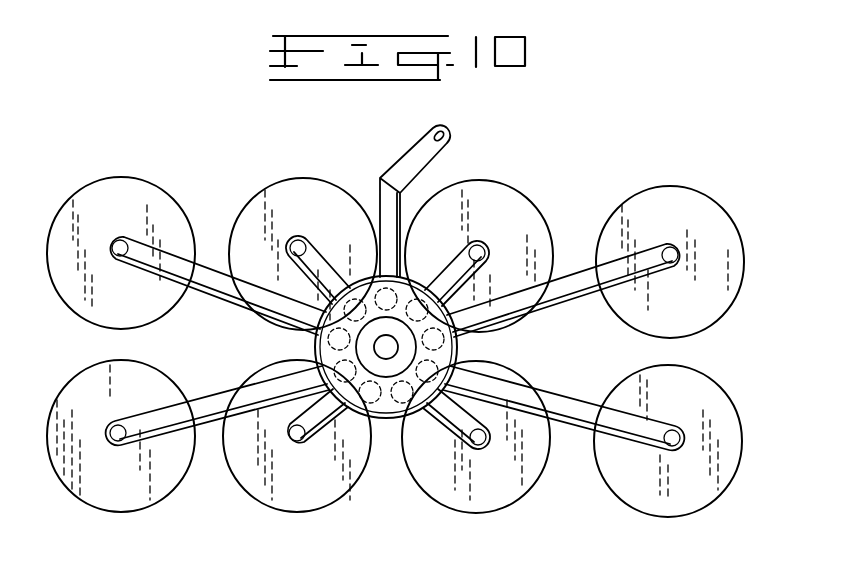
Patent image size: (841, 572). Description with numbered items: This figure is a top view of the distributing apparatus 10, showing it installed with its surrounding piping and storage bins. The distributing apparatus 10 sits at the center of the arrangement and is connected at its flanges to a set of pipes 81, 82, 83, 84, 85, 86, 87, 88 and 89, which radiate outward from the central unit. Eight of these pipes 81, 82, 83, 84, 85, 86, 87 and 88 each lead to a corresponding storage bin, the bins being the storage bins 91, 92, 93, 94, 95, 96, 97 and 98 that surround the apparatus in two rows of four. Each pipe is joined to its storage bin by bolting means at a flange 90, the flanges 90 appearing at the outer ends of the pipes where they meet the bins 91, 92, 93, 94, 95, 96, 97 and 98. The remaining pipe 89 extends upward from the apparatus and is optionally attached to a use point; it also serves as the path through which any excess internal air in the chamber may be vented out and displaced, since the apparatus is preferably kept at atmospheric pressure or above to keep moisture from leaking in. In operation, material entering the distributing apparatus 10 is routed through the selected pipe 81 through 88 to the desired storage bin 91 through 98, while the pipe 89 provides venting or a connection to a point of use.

The distributing apparatus 10 is at (512, 350).
The pipe 81 is at (144, 470).
The pipe 82 is at (330, 420).
The pipe 83 is at (402, 425).
The pipe 84 is at (582, 430).
The pipe 85 is at (203, 277).
The pipe 86 is at (313, 260).
The pipe 87 is at (450, 275).
The pipe 88 is at (587, 278).
The pipe 89 is at (408, 150).
The flange 90 is at (290, 420).
The storage bin 91 is at (110, 503).
The storage bin 92 is at (263, 507).
The storage bin 93 is at (470, 500).
The storage bin 94 is at (673, 493).
The storage bin 95 is at (90, 183).
The storage bin 96 is at (302, 185).
The storage bin 97 is at (518, 200).
The storage bin 98 is at (690, 190).